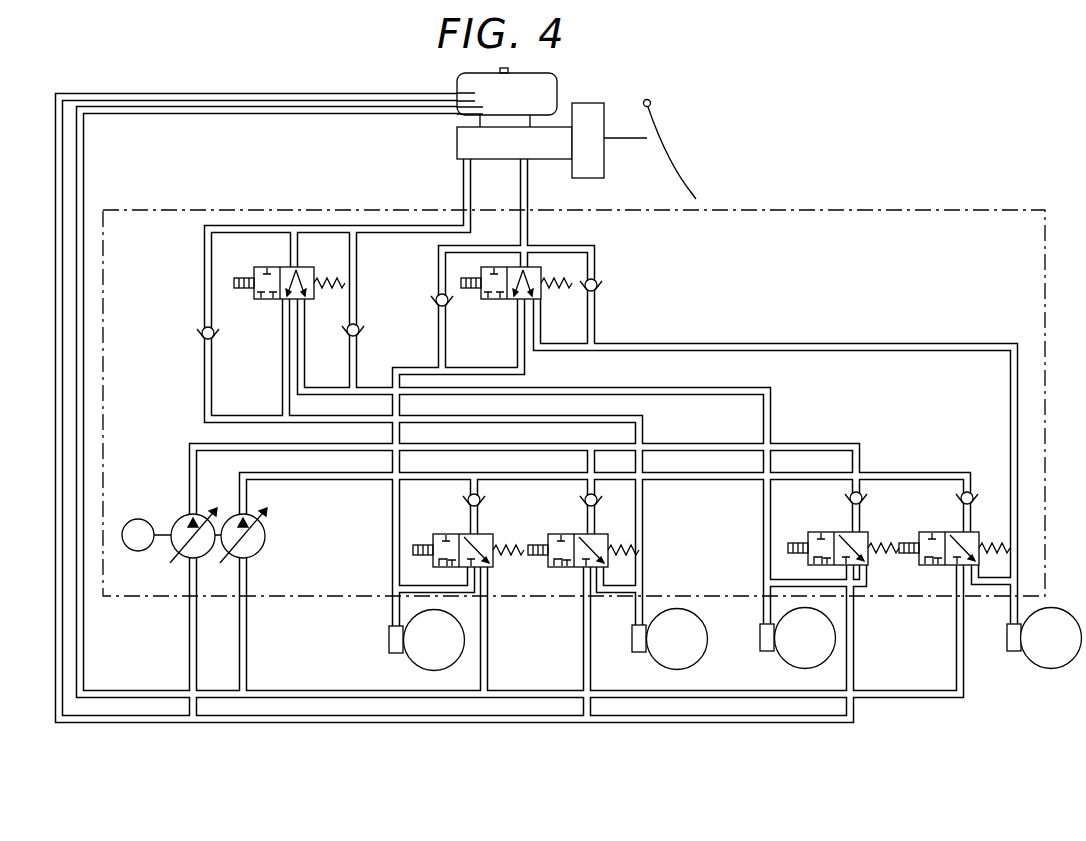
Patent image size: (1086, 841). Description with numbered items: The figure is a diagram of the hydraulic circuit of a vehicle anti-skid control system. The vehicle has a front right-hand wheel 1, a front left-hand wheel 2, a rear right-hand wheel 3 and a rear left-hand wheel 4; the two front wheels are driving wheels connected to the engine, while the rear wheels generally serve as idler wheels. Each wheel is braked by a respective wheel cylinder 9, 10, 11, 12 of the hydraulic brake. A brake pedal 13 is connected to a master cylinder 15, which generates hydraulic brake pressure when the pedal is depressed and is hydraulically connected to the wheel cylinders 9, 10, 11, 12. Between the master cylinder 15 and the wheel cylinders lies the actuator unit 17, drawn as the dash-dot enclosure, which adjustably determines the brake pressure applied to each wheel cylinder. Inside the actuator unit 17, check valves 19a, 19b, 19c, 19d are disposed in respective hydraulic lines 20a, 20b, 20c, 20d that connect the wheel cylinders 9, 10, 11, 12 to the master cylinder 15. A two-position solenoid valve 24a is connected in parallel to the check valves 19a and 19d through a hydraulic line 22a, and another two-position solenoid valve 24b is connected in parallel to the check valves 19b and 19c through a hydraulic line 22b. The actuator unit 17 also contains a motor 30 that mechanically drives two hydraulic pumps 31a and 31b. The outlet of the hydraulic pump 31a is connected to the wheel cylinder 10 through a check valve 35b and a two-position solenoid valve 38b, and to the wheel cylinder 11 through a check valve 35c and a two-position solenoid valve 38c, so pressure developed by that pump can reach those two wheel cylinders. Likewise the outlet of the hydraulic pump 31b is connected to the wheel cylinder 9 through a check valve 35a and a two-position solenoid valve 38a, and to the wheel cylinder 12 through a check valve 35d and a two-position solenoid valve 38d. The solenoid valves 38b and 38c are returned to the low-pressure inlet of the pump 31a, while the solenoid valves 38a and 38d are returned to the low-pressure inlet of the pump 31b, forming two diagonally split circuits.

The front right-hand wheel 1 is at (410, 659).
The front left-hand wheel 2 is at (657, 658).
The rear right-hand wheel 3 is at (787, 657).
The rear left-hand wheel 4 is at (1032, 657).
The wheel cylinder 9 is at (389, 640).
The wheel cylinder 10 is at (632, 640).
The wheel cylinder 11 is at (760, 640).
The wheel cylinder 12 is at (1007, 640).
The brake pedal 13 is at (667, 160).
The master cylinder 15 is at (457, 145).
The actuator unit 17 is at (914, 210).
The check valve 19a is at (437, 297).
The check valve 19b is at (203, 328).
The check valve 19c is at (359, 326).
The check valve 19d is at (600, 283).
The hydraulic line 20a is at (392, 513).
The hydraulic line 20b is at (647, 546).
The hydraulic line 20c is at (762, 510).
The hydraulic line 20d is at (1010, 412).
The hydraulic line 22a is at (530, 262).
The hydraulic line 22b is at (293, 264).
The two-position solenoid valve 24a is at (548, 299).
The two-position solenoid valve 24b is at (314, 272).
The motor 30 is at (137, 519).
The hydraulic pump 31a is at (178, 516).
The hydraulic pump 31b is at (265, 535).
The check valve 35a is at (467, 500).
The check valve 35b is at (585, 500).
The check valve 35c is at (849, 498).
The check valve 35d is at (960, 498).
The two position solenoid valve 38a is at (487, 534).
The two position solenoid valve 38b is at (609, 540).
The two position solenoid valve 38c is at (869, 535).
The two position solenoid valve 38d is at (982, 531).